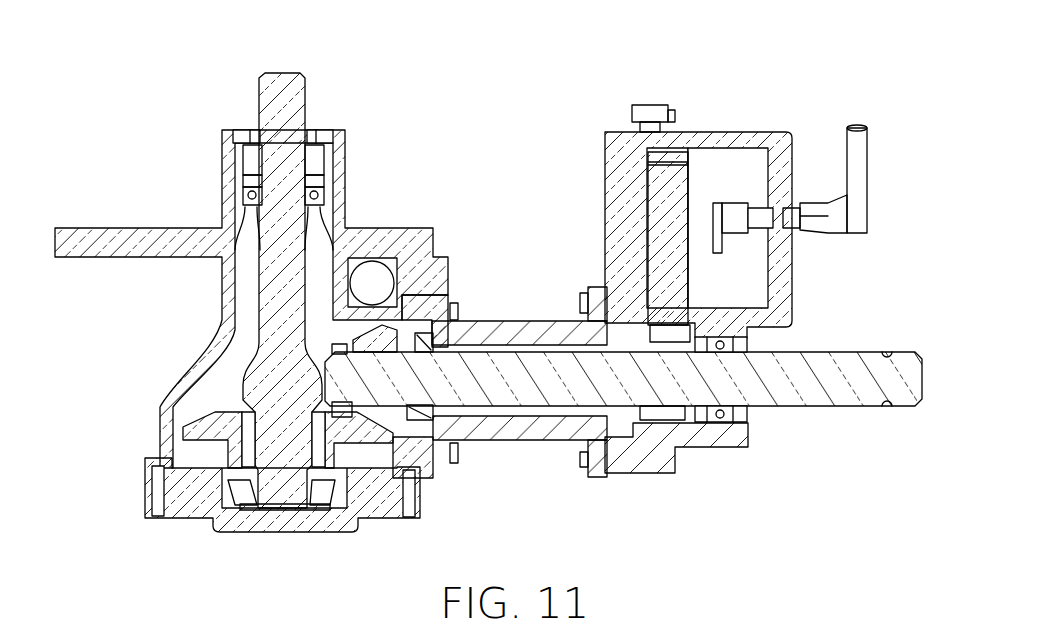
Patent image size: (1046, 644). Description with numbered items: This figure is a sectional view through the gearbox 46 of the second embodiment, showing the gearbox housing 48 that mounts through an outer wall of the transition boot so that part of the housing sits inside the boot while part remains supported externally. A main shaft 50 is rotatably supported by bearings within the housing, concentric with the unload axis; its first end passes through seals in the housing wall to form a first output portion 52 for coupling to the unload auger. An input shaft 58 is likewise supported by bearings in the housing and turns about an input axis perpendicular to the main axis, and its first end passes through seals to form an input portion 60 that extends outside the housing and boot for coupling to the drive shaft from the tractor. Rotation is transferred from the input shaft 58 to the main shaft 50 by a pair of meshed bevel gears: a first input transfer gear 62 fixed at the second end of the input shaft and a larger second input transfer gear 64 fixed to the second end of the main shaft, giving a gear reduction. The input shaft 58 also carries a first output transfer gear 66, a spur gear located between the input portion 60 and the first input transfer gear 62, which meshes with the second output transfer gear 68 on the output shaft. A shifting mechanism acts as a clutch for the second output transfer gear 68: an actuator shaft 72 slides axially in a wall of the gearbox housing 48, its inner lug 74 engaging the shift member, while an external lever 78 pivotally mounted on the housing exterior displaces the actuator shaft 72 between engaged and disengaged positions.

The gearbox 46 is at (493, 88).
The gearbox housing 48 is at (533, 437).
The main shaft 50 is at (273, 305).
The first output portion 52 is at (302, 98).
The input shaft 58 is at (498, 373).
The input portion 60 is at (848, 387).
The first input transfer gear 62 is at (372, 338).
The second input transfer gear 64 is at (207, 427).
The first output transfer gear 66 is at (667, 427).
The second output transfer gear 68 is at (670, 192).
The actuator shaft 72 is at (753, 217).
The lug 74 is at (725, 247).
The external lever 78 is at (848, 193).